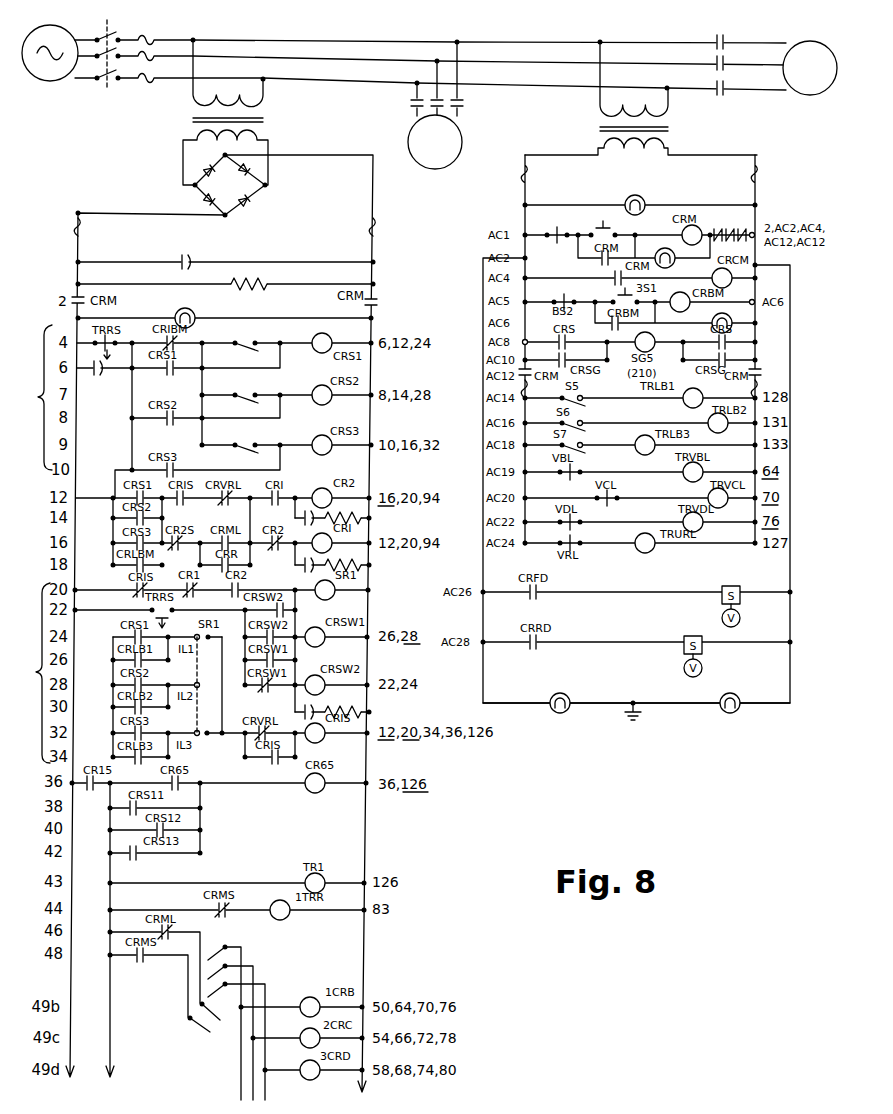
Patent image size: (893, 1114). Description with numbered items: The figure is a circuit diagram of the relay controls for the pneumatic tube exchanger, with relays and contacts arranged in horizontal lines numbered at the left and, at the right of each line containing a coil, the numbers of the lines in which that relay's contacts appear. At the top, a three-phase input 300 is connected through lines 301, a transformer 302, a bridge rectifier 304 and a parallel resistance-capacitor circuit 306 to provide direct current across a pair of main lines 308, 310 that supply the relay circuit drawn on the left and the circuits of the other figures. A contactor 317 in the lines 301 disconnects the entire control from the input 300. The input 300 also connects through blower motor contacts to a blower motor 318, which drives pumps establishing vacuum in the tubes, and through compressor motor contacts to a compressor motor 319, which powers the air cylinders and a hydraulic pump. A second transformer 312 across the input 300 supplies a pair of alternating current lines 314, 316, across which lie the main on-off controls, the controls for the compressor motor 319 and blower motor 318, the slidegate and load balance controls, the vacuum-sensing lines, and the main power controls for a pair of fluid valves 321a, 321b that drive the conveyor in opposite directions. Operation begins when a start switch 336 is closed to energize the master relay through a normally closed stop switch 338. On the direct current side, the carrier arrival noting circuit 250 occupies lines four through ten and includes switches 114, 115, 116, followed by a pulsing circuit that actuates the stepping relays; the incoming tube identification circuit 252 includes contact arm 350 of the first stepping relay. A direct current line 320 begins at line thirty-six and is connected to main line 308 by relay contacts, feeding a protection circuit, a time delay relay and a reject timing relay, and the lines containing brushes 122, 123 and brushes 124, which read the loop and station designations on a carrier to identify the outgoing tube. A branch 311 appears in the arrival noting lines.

The three-phase input 300 is at (48, 82).
The contactor 317 is at (114, 86).
The lines 301 is at (236, 82).
The transformer 302 is at (266, 102).
The bridge rectifier 304 is at (250, 202).
The parallel resistance-capacitor circuit 306 is at (230, 284).
The main line 308 is at (70, 244).
The main line 310 is at (376, 244).
The branch line 311 is at (130, 391).
The transformer 312 is at (670, 150).
The alternating current line 314 is at (523, 185).
The alternating current line 316 is at (757, 190).
The blower motor 318 is at (800, 94).
The compressor motor 319 is at (463, 146).
The fluid valve 321a is at (722, 616).
The fluid valve 321b is at (703, 668).
The start switch 336 is at (606, 226).
The stop switch 338 is at (565, 231).
The contact arm 350 is at (208, 640).
The carrier arrival noting circuit 250 is at (34, 397).
The incoming tube identification circuit 252 is at (31, 673).
The direct current line 320 is at (108, 795).
The switch 114 is at (249, 343).
The switch 115 is at (249, 395).
The switch 116 is at (249, 445).
The brush 122 is at (205, 1004).
The brush 123 is at (192, 1023).
The brushes 124 is at (227, 983).